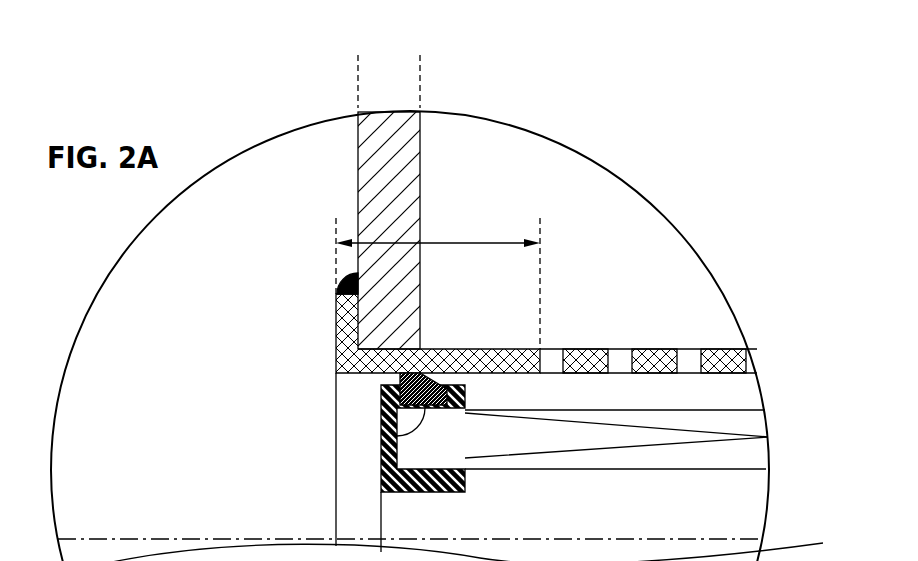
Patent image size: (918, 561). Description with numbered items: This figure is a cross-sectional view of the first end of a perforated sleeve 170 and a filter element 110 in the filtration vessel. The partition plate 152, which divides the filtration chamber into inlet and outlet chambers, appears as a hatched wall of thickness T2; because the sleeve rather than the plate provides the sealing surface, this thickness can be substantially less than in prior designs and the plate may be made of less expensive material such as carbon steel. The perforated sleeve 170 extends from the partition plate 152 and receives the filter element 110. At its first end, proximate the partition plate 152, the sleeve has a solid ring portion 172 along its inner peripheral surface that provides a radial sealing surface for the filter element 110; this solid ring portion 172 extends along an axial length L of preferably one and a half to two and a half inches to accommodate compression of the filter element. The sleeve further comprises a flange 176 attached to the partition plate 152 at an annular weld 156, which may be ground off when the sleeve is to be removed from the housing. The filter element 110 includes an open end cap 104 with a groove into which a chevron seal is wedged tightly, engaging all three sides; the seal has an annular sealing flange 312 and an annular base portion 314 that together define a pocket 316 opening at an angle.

The thickness T2 is at (470, 77).
The axial length L is at (493, 241).
The partition plate 152 is at (370, 205).
The annular weld 156 is at (347, 277).
The flange 176 is at (336, 324).
The solid ring portion 172 is at (508, 348).
The annular sealing flange 312 is at (450, 347).
The perforated sleeve 170 is at (652, 348).
The open end cap 104 is at (380, 467).
The pocket 316 is at (386, 381).
The annular base portion 314 is at (380, 438).
The filter element 110 is at (507, 469).